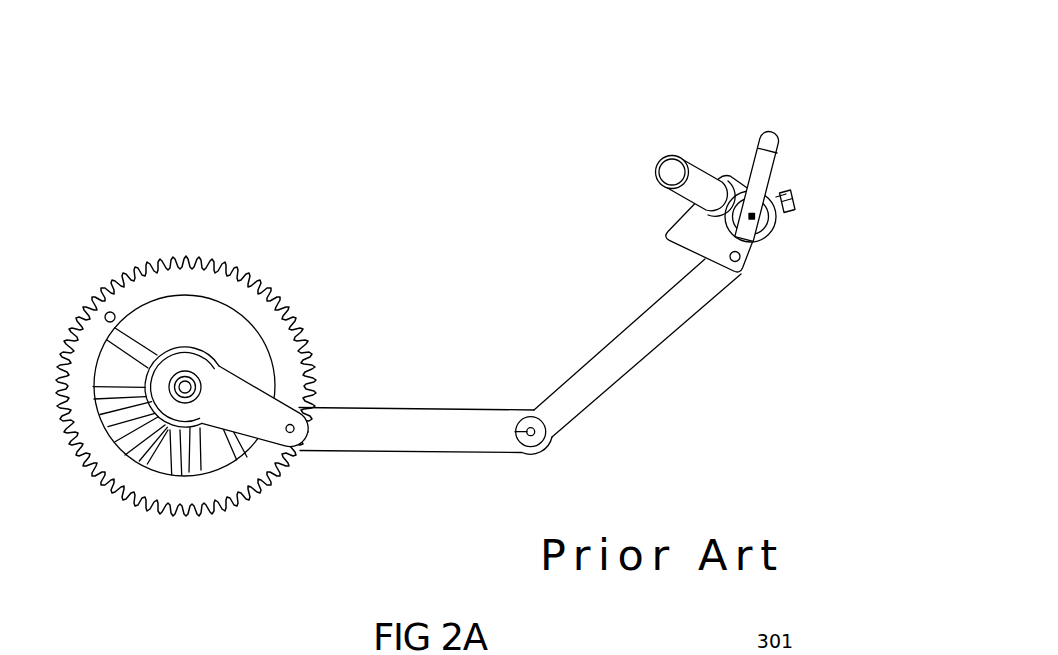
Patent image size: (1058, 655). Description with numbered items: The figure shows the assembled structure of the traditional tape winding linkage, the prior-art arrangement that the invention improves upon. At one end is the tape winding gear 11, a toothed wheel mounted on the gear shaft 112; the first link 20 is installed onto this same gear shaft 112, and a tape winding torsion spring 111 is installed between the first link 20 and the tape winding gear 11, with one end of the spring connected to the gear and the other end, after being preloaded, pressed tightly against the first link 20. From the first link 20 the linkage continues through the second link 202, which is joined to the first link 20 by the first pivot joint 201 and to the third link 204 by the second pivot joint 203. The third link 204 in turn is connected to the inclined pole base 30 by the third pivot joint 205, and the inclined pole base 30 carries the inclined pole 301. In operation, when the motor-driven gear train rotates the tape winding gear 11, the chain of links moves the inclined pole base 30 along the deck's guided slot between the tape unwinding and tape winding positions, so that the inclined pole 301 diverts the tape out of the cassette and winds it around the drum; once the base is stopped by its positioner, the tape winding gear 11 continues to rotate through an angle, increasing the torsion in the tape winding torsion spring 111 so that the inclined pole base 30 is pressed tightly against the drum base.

The tape winding gear 11 is at (168, 490).
The tape winding torsion spring 111 is at (97, 398).
The gear shaft 112 is at (201, 387).
The first link 20 is at (262, 426).
The first pivot joint 201 is at (298, 420).
The second link 202 is at (410, 430).
The second pivot joint 203 is at (524, 433).
The third link 204 is at (686, 321).
The inclined pole base 30 is at (678, 220).
The inclined pole 301 is at (695, 163).
The third pivot joint 205 is at (790, 190).